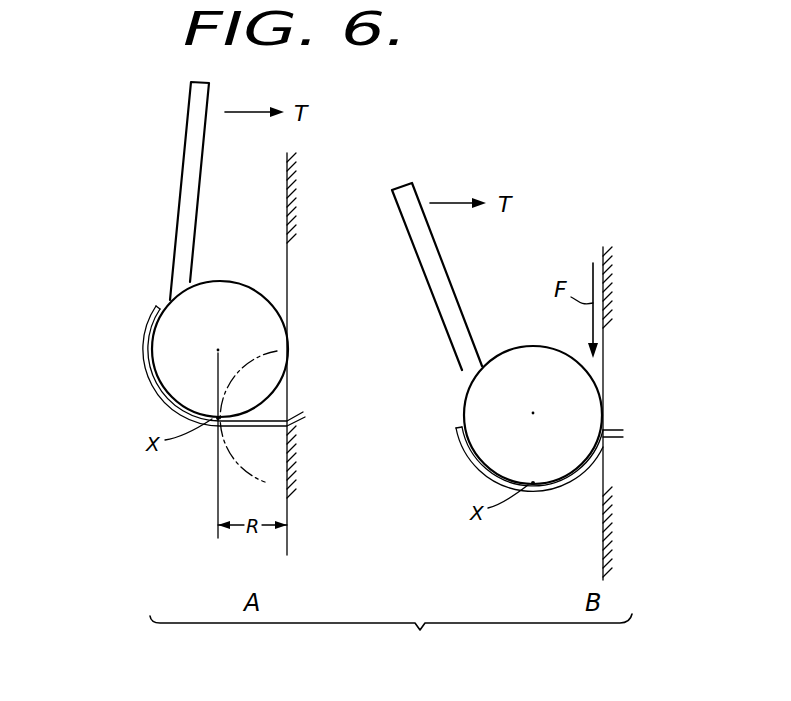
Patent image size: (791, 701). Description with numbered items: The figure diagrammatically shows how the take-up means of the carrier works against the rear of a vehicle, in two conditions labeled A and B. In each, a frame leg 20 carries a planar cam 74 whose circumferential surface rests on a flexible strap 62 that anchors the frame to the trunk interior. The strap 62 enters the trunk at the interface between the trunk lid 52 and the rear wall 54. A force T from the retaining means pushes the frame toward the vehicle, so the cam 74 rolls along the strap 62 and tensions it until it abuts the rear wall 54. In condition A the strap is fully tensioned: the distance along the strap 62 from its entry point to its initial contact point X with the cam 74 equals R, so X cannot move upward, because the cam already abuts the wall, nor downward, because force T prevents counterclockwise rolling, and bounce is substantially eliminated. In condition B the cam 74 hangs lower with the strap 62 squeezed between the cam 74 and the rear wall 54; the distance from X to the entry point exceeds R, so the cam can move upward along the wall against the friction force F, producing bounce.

The leg 20 is at (178, 217).
The cam 74 is at (172, 349).
The trunk lid 52 is at (293, 173).
The rear wall 54 is at (289, 505).
The strap 62 is at (268, 428).